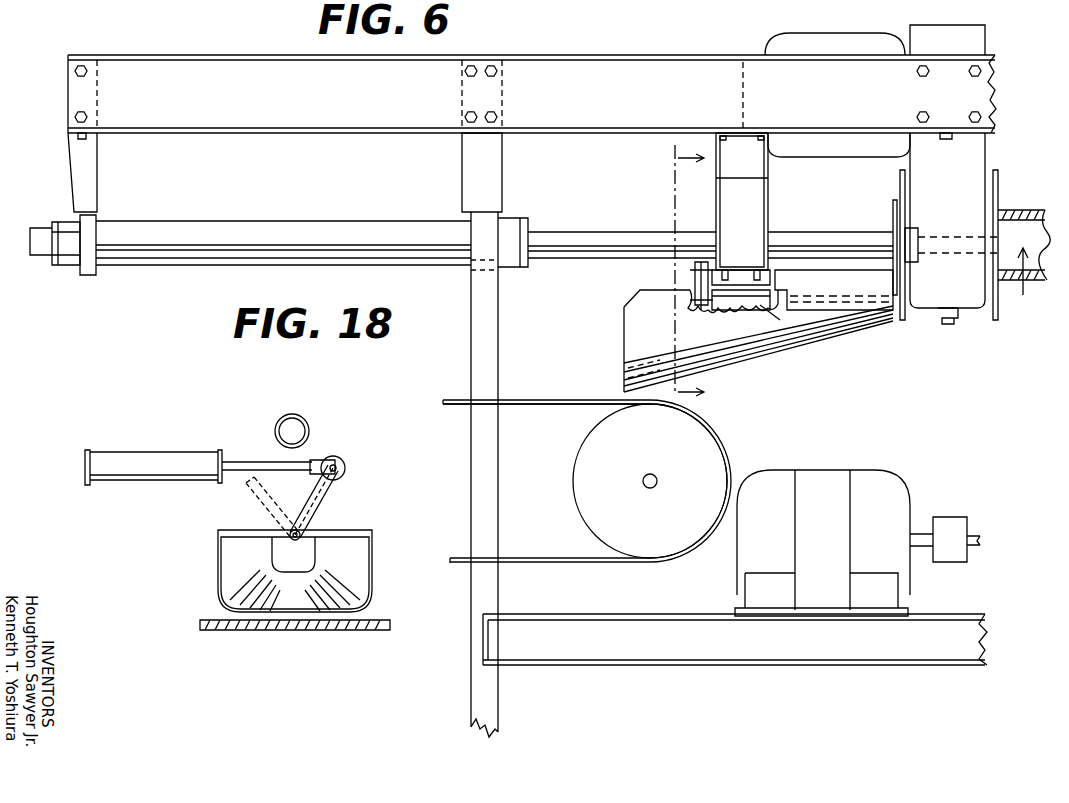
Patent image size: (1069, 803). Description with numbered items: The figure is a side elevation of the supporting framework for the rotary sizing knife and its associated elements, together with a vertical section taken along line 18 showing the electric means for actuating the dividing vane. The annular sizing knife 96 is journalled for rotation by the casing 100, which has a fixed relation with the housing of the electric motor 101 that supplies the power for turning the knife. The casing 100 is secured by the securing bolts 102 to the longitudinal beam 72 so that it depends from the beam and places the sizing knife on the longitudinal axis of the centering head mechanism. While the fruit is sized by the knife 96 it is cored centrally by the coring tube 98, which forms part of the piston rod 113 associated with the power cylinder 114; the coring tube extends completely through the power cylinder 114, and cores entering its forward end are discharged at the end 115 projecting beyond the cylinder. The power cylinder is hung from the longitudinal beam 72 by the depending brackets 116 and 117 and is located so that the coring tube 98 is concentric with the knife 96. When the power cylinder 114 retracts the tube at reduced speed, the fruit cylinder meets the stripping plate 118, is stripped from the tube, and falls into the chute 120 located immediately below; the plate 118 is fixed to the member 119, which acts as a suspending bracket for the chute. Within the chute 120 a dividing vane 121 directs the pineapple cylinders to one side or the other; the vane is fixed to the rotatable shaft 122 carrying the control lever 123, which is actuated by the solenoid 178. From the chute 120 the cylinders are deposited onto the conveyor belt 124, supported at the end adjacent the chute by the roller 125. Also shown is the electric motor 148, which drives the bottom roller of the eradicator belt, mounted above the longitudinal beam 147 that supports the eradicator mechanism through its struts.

In FIG. 6, the longitudinal beam 72 is at (640, 67).
In FIG. 6, the electric motor 101 is at (845, 48).
In FIG. 6, the securing bolt 102 is at (985, 71).
In FIG. 6, the casing 100 is at (975, 157).
In FIG. 6, the annular sizing knife 96 is at (1026, 206).
In FIG. 6, the coring tube 98 is at (1023, 295).
In FIG. 6, the depending bracket 116 is at (87, 182).
In FIG. 6, the end of coring tube 115 is at (40, 237).
In FIG. 6, the power cylinder 114 is at (305, 228).
In FIG. 6, the depending bracket 117 is at (488, 180).
In FIG. 6, the piston rod 113 is at (612, 217).
In FIG. 18, the piston rod 113 is at (304, 425).
In FIG. 6, the section line 18 is at (676, 270).
In FIG. 6, the stripping plate 118 is at (770, 215).
In FIG. 6, the suspending bracket member 119 is at (735, 178).
In FIG. 6, the chute 120 is at (742, 350).
In FIG. 18, the chute 120 is at (218, 560).
In FIG. 6, the dividing vane 121 is at (840, 280).
In FIG. 18, the dividing vane 121 is at (255, 487).
In FIG. 6, the rotatable shaft 122 is at (755, 305).
In FIG. 18, the rotatable shaft 122 is at (272, 550).
In FIG. 6, the control lever 123 is at (695, 287).
In FIG. 18, the control lever 123 is at (342, 474).
In FIG. 6, the conveyor belt 124 is at (575, 382).
In FIG. 18, the conveyor belt 124 is at (200, 616).
In FIG. 6, the roller 125 is at (592, 458).
In FIG. 6, the electric motor 148 is at (885, 497).
In FIG. 6, the longitudinal beam 147 is at (898, 650).
In FIG. 18, the solenoid 178 is at (158, 467).